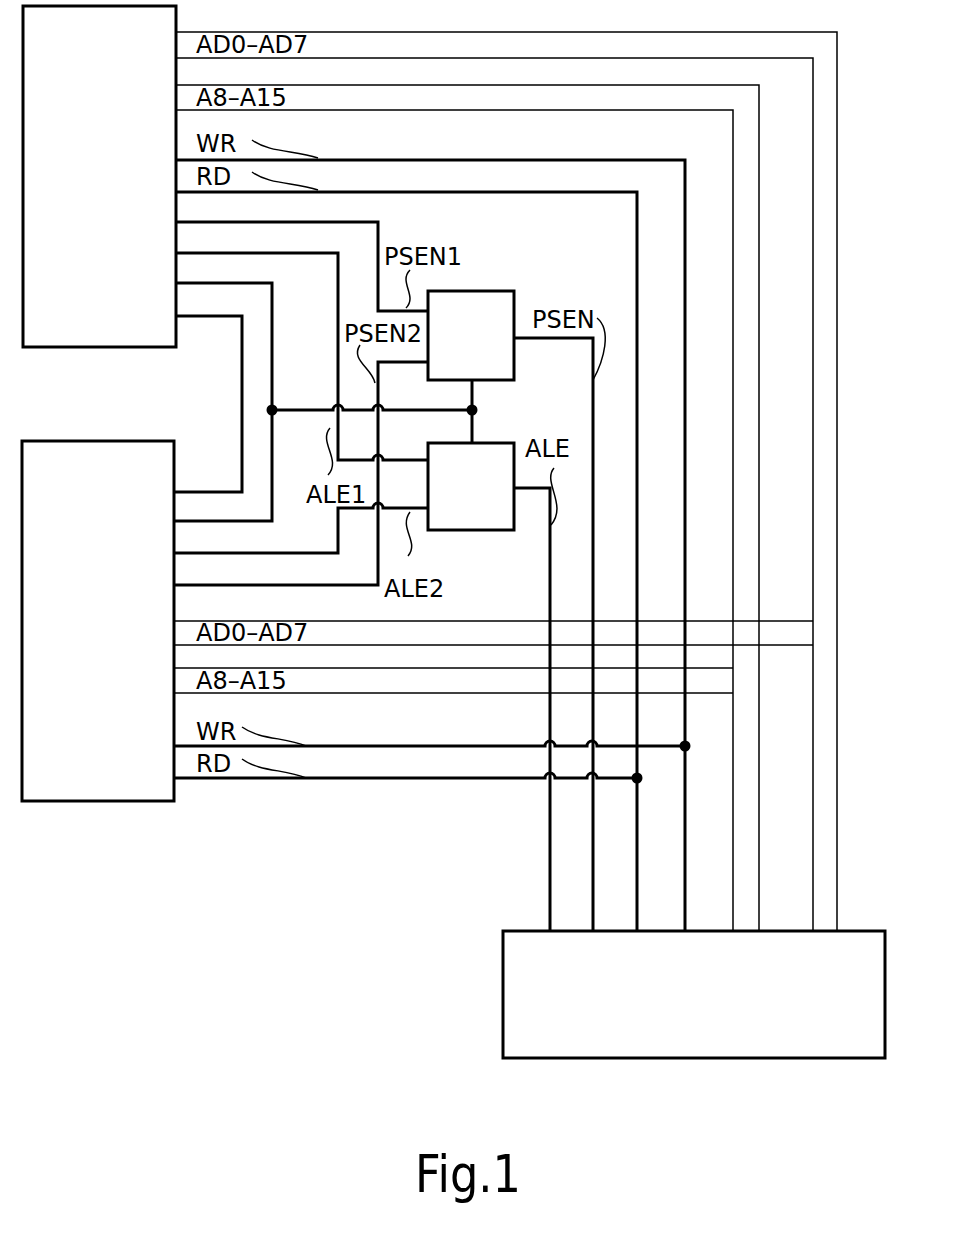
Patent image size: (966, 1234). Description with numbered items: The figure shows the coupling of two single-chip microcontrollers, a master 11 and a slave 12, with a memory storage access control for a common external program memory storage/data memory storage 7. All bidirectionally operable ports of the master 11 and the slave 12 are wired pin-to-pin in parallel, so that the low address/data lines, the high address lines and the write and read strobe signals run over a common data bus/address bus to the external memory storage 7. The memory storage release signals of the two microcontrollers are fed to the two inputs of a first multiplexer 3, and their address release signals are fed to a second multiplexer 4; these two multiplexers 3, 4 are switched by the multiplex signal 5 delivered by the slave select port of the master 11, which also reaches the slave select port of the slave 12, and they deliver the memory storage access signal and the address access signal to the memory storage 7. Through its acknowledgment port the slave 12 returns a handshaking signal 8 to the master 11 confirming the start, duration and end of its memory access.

The master microcontroller 11 is at (56, 299).
The slave microcontroller 12 is at (55, 771).
The multiplexer 3 is at (487, 322).
The multiplexer 4 is at (487, 512).
The multiplex signal 5 is at (273, 373).
The external program memory storage/data memory storage 7 is at (547, 1033).
The handshaking signal 8 is at (240, 345).